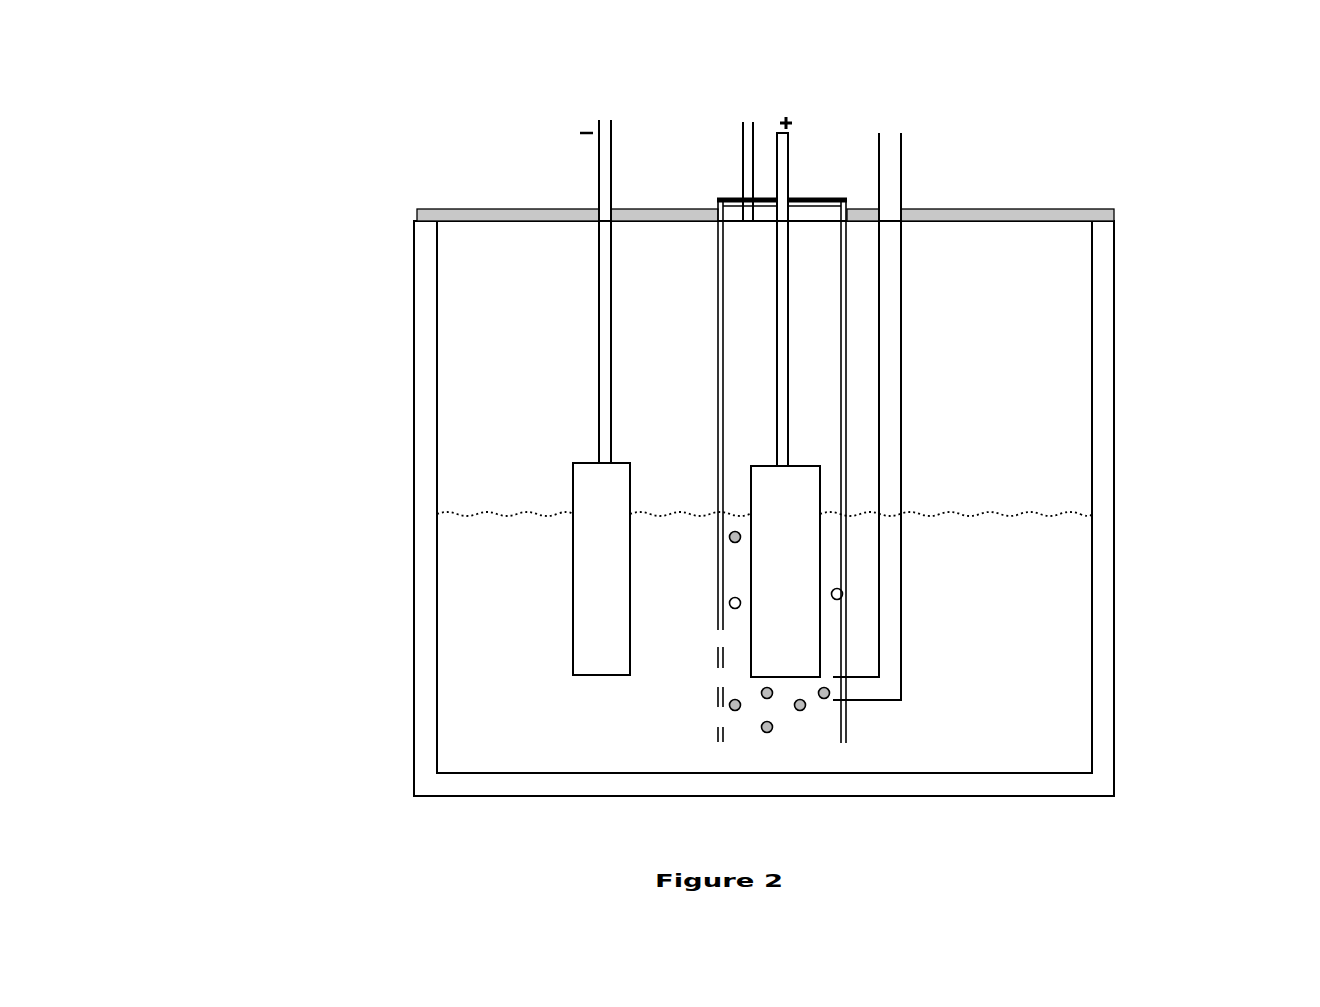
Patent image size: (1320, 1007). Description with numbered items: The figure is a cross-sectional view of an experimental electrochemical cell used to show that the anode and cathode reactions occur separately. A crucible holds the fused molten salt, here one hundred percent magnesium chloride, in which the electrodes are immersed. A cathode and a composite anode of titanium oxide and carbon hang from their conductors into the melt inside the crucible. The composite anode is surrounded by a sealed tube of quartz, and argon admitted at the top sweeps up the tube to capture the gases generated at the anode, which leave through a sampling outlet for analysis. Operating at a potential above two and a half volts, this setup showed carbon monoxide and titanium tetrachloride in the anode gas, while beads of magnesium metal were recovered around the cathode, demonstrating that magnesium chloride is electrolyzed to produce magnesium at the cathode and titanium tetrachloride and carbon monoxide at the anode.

The element crucible is at (1115, 459).